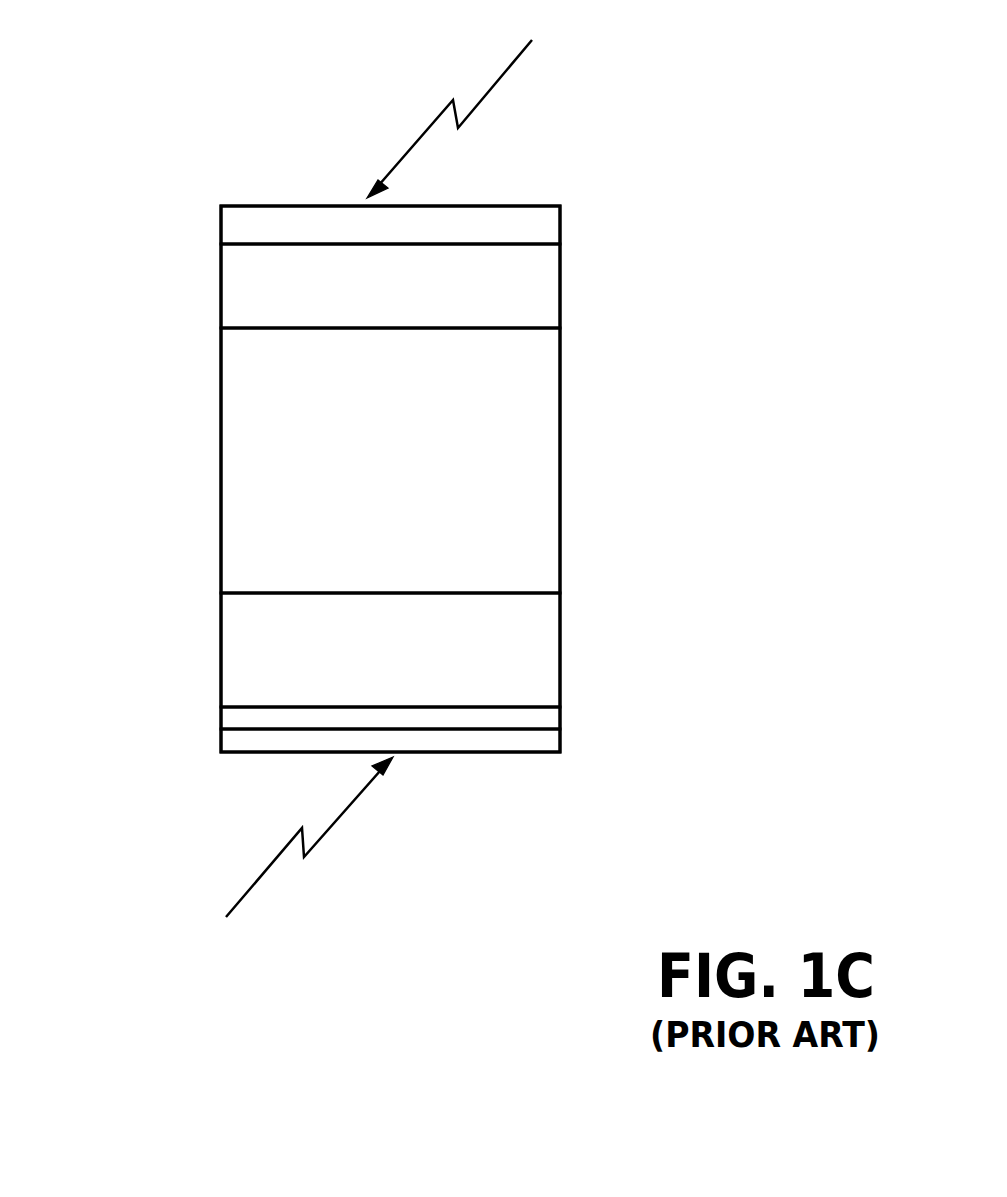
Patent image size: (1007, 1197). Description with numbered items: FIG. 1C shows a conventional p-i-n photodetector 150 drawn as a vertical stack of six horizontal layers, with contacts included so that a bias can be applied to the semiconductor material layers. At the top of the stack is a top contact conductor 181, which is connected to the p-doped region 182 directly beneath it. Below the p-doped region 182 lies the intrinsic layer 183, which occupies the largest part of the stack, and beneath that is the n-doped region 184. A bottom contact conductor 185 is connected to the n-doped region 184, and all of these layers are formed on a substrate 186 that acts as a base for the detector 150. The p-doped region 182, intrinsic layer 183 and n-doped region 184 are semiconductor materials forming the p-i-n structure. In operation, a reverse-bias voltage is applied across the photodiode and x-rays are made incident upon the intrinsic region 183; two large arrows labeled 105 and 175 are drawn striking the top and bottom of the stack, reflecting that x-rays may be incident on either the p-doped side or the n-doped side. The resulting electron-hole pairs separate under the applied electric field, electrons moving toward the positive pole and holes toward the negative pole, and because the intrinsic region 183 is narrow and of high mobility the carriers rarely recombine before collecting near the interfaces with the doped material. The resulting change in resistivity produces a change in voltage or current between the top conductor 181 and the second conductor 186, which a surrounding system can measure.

The photodetector 150 is at (148, 518).
The top contact conductor 181 is at (560, 220).
The p-doped region 182 is at (560, 285).
The intrinsic layer 183 is at (560, 460).
The n-doped region 184 is at (560, 630).
The bottom contact conductor 185 is at (560, 709).
The substrate 186 is at (560, 740).
The incident light beam 105 is at (493, 87).
The light beam 175 is at (253, 888).